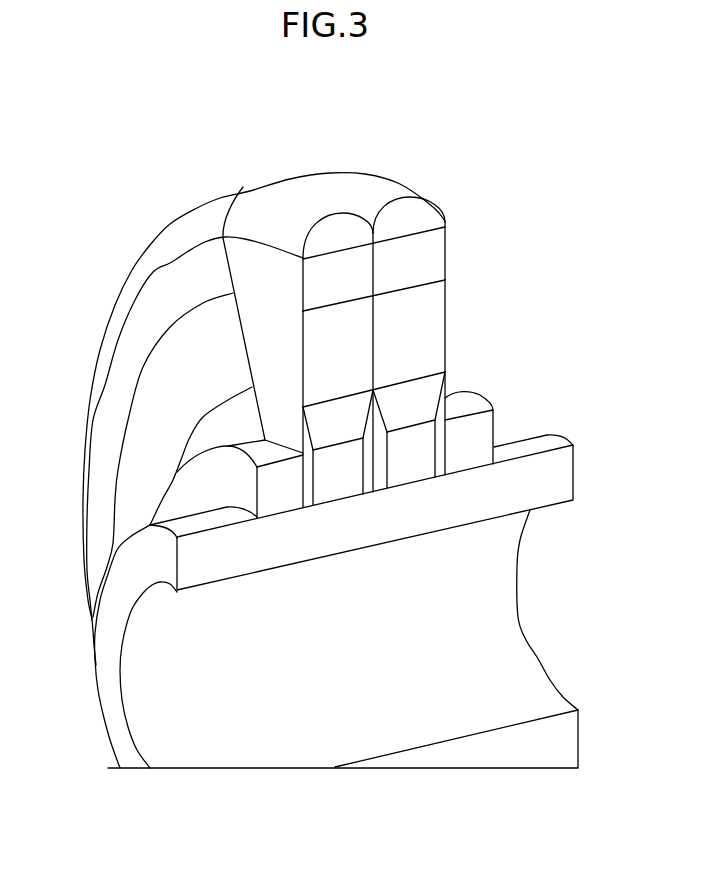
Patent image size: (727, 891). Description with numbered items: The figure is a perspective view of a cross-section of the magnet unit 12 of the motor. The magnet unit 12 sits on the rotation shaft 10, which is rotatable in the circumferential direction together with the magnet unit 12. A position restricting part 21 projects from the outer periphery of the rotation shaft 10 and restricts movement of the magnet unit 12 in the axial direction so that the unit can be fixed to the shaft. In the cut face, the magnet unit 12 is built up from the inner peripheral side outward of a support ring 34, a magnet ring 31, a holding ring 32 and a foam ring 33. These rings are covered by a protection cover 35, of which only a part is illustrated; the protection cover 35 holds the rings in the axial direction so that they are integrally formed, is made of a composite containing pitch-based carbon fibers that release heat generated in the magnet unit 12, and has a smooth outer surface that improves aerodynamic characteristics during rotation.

The rotation shaft 10 is at (560, 470).
The magnet unit 12 is at (245, 189).
The position restricting part 21 is at (480, 423).
The magnet ring 31 is at (412, 318).
The holding ring 32 is at (412, 248).
The foam ring 33 is at (412, 218).
The support ring 34 is at (412, 385).
The protection cover 35 is at (263, 272).